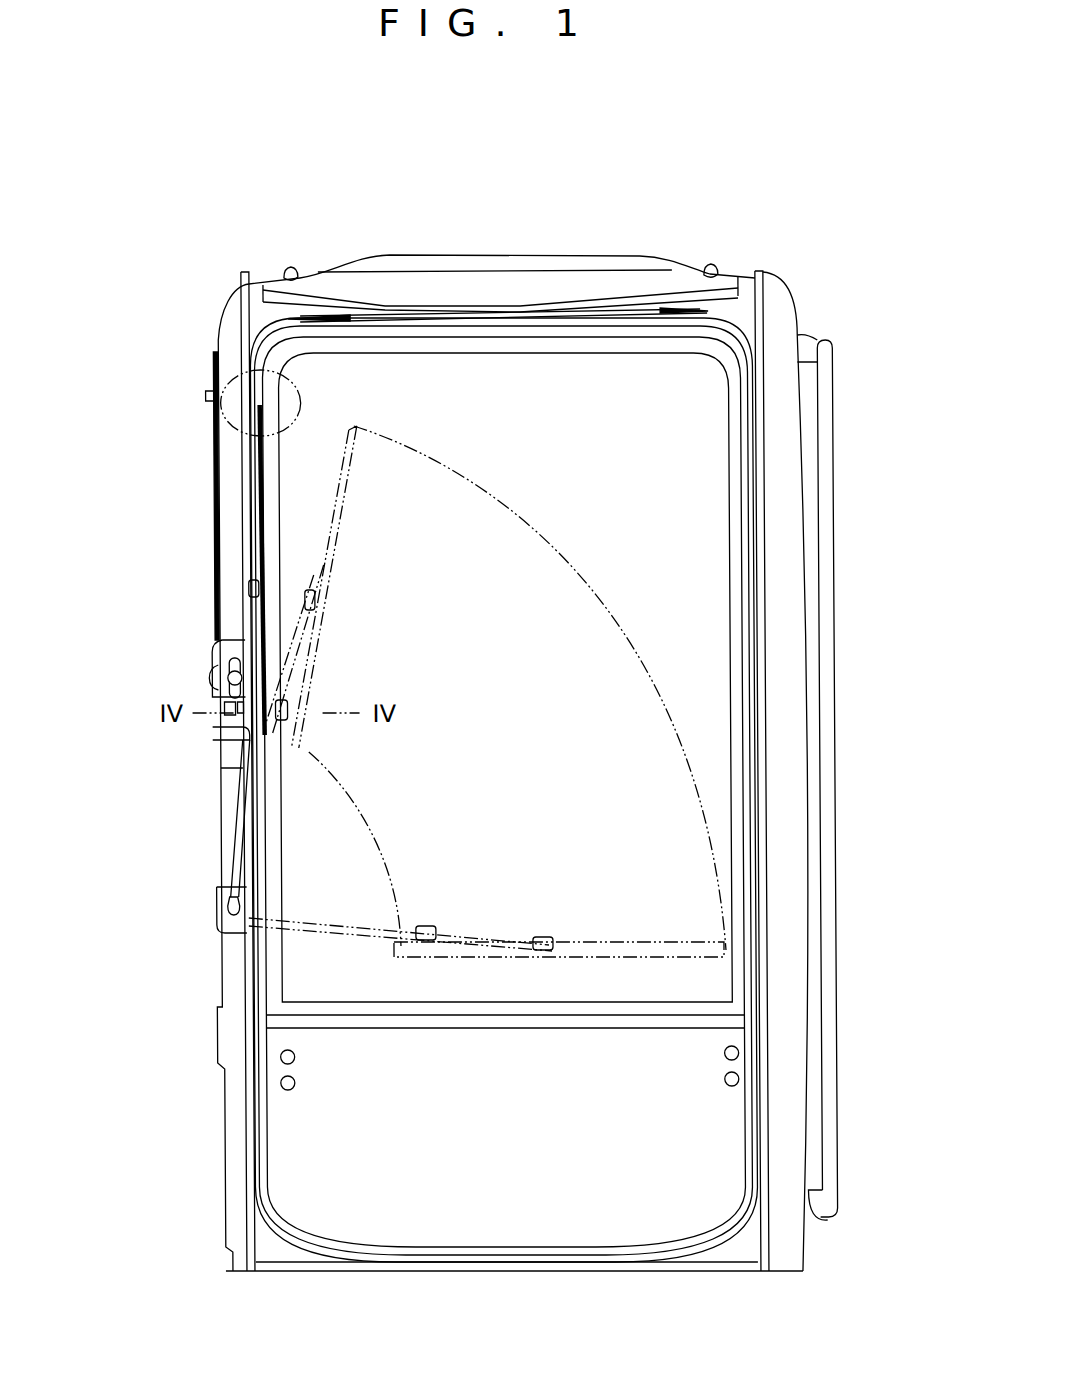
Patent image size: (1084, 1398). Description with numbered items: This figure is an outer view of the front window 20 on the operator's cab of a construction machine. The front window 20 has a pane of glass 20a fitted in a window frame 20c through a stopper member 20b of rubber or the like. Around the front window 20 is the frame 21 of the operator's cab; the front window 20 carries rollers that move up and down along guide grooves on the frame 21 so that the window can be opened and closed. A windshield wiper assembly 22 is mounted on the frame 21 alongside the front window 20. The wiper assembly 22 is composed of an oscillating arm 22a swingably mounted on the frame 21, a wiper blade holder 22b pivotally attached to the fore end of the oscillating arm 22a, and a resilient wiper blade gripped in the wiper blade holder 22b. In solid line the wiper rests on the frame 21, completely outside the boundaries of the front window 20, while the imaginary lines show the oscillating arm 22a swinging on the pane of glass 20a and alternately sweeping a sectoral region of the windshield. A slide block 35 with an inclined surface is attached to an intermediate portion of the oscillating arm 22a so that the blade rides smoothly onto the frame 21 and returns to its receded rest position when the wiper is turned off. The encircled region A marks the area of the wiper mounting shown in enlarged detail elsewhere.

The front window 20 is at (478, 336).
The pane of glass 20a is at (710, 535).
The stopper member 20b is at (738, 798).
The window frame 20c is at (749, 941).
The frame 21 is at (230, 1005).
The windshield wiper assembly 22 is at (237, 787).
The oscillating arm 22a is at (237, 847).
The wiper blade holder 22b is at (262, 465).
The slide block 35 is at (217, 703).
The detail region A is at (227, 378).